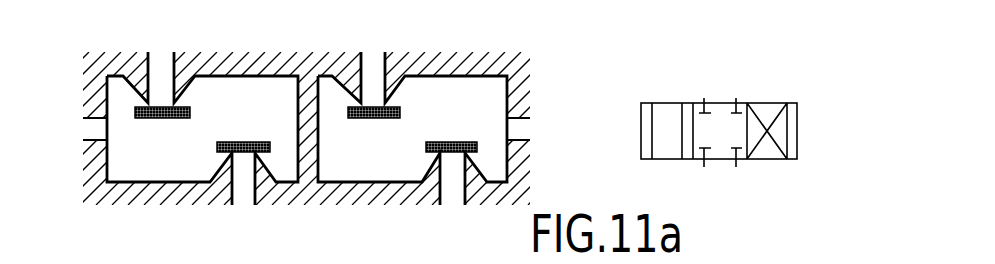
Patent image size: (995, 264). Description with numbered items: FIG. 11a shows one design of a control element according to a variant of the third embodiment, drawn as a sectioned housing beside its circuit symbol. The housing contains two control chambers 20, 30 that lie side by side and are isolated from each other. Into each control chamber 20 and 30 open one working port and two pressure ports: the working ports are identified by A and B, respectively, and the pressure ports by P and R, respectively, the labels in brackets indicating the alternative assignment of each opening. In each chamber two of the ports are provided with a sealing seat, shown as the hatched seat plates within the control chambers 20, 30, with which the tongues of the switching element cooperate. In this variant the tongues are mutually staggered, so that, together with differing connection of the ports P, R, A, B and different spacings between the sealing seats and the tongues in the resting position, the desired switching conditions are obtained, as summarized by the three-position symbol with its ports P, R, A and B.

The control chamber 20 is at (160, 163).
The control chamber 30 is at (392, 163).
The pressure port P is at (705, 90).
The pressure port R is at (739, 90).
The working port A is at (707, 174).
The working port B is at (739, 174).